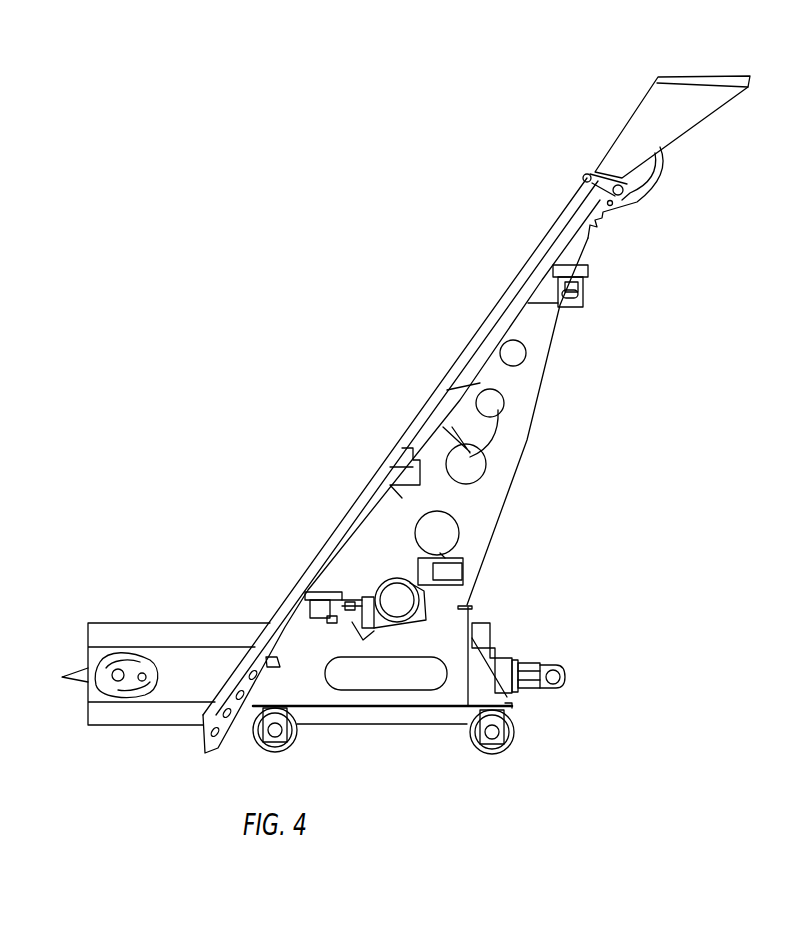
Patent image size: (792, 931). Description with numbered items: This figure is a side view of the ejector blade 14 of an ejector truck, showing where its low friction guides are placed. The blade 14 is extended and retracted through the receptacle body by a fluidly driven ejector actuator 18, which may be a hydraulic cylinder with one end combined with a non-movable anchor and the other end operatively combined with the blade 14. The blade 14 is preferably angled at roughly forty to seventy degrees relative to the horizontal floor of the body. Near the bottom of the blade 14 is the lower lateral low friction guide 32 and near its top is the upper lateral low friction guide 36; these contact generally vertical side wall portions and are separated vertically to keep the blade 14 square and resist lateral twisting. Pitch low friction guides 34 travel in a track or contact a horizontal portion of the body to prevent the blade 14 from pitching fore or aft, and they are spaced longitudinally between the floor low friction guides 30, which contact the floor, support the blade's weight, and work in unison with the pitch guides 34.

The ejector blade 14 is at (505, 322).
The ejector actuator 18 is at (538, 675).
The floor low friction guides 30 is at (490, 763).
The lower lateral low friction guide 32 is at (320, 598).
The pitch low friction guides 34 is at (402, 597).
The upper lateral low friction guide 36 is at (588, 273).